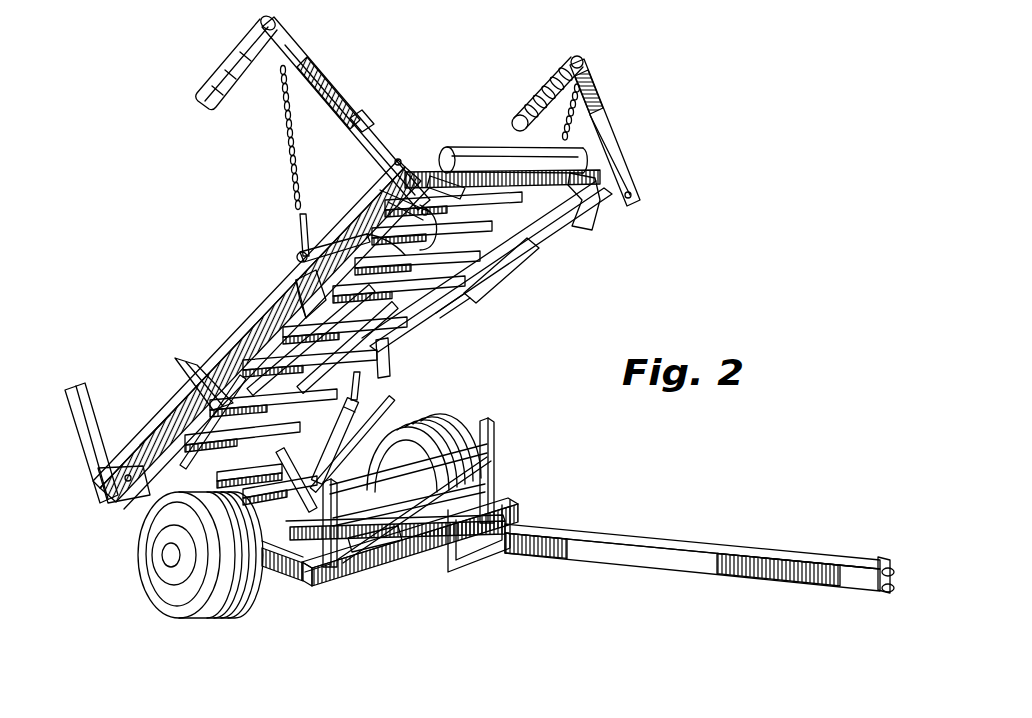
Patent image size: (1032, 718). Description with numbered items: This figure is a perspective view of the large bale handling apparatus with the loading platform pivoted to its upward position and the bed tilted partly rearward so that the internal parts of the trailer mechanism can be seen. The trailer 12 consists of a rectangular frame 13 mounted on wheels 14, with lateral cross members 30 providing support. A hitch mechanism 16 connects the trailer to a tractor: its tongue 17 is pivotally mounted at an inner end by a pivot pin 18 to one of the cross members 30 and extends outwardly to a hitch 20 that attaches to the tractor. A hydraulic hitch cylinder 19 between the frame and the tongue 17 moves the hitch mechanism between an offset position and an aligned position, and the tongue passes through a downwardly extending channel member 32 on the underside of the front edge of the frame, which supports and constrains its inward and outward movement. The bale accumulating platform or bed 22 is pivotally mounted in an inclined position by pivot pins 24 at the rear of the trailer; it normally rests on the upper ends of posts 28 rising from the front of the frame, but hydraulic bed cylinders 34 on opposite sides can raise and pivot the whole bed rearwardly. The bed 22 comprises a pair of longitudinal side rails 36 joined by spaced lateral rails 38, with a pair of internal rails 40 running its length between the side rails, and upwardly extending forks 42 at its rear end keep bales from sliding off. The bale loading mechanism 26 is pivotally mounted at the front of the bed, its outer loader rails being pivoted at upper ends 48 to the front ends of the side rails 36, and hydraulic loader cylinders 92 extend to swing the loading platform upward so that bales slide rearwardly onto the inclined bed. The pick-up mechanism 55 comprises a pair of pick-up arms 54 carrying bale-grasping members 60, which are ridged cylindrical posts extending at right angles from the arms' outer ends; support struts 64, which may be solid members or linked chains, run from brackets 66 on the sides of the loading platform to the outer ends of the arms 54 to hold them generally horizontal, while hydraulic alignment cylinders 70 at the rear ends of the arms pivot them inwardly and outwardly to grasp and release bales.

The trailer 12 is at (297, 598).
The frame 13 is at (362, 428).
The wheels 14 is at (140, 540).
The hitch mechanism 16 is at (714, 542).
The tongue 17 is at (792, 560).
The pivot pin 18 is at (488, 483).
The hydraulic hitch cylinder 19 is at (368, 545).
The hitch 20 is at (893, 562).
The bale accumulating platform or bed 22 is at (244, 322).
The pivot pins 24 is at (118, 493).
The bale loading mechanism 26 is at (458, 126).
The posts 28 is at (494, 435).
The lateral cross members 30 is at (307, 578).
The channel member 32 is at (481, 568).
The hydraulic bed cylinders 34 is at (141, 450).
The longitudinal side rails 36 is at (150, 448).
The lateral rails 38 is at (422, 295).
The internal rails 40 is at (275, 340).
The forks 42 is at (78, 386).
The upper ends 48 is at (328, 276).
The pick-up arms 54 is at (343, 108).
The pick-up mechanism 55 is at (337, 68).
The bale-grasping members 60 is at (232, 100).
The support struts 64 is at (291, 168).
The brackets 66 is at (312, 246).
The hydraulic alignment cylinders 70 is at (462, 186).
The hydraulic loader cylinders 92 is at (522, 252).